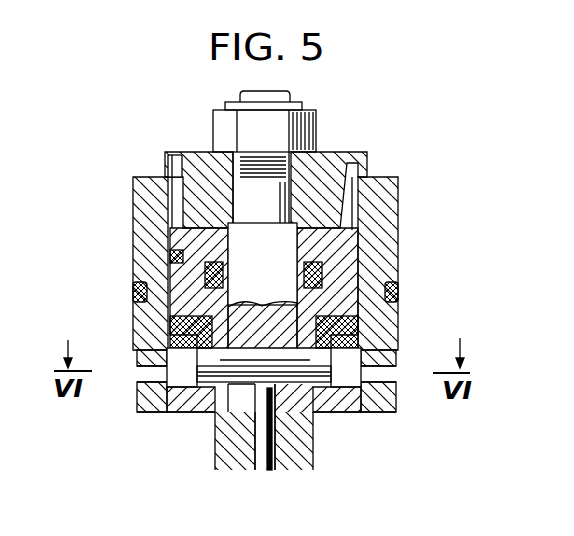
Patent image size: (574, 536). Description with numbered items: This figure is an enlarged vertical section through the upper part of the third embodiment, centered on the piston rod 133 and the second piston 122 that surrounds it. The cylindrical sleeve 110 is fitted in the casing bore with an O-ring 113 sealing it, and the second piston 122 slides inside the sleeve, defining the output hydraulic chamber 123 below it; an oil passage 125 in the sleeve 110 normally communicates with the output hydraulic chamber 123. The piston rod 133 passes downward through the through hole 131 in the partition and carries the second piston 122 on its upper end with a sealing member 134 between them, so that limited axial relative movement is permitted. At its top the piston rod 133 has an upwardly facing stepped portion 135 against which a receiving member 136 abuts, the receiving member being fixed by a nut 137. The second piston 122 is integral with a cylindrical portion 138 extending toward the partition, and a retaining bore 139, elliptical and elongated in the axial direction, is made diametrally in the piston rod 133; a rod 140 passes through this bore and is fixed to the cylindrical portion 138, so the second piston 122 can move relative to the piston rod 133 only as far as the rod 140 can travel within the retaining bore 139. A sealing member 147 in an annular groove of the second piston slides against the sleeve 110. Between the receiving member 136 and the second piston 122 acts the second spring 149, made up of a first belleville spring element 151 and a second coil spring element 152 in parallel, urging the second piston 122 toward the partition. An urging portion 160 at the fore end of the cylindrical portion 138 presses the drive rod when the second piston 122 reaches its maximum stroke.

The cylindrical sleeve 110 is at (137, 212).
The O-ring 113 is at (398, 293).
The second piston 122 is at (173, 273).
The output hydraulic chamber 123 is at (127, 355).
The oil passage 125 is at (420, 372).
The through hole 131 is at (316, 457).
The piston rod 133 is at (265, 265).
The sealing member 134 is at (300, 288).
The stepped portion 135 is at (293, 222).
The receiving member 136 is at (330, 156).
The nut 137 is at (226, 123).
The cylindrical portion 138 is at (258, 366).
The retaining bore 139 is at (270, 354).
The rod 140 is at (273, 418).
The sealing member 147 is at (352, 333).
The second spring 149 is at (415, 263).
The first belleville spring element 151 is at (350, 233).
The second coil spring element 152 is at (357, 207).
The urging portion 160 is at (178, 412).